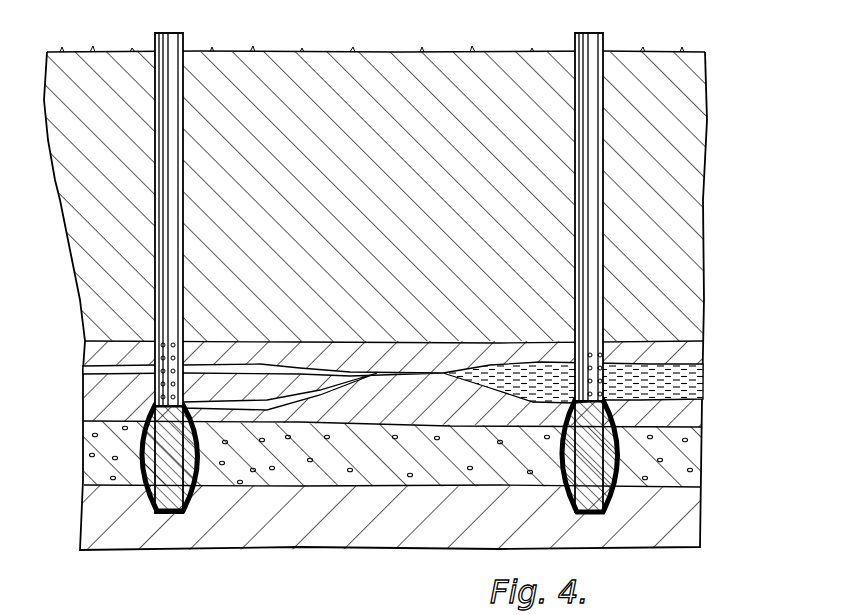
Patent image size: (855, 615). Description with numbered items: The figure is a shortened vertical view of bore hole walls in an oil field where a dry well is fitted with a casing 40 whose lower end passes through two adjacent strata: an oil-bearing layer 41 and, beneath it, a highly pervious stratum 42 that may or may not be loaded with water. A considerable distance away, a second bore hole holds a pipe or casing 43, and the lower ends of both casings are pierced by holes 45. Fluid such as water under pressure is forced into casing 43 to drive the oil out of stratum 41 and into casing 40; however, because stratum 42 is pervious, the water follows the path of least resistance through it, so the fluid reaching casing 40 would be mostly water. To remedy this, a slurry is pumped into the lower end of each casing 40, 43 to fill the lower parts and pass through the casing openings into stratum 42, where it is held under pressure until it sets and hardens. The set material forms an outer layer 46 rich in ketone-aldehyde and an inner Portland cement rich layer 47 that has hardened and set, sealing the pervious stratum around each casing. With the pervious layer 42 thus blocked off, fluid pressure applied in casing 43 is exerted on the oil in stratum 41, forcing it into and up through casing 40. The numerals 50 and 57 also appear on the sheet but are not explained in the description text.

The casing 40 is at (173, 42).
The pipe or casing 43 is at (598, 39).
The oil-bearing layer 41 is at (98, 400).
The pervious stratum 42 is at (690, 467).
The holes 45 is at (600, 343).
The outer layer rich in ketone-aldehyde 46 is at (137, 438).
The inner Portland cement rich layer 47 is at (137, 467).
The element 50 is at (343, 613).
The element 57 is at (302, 613).